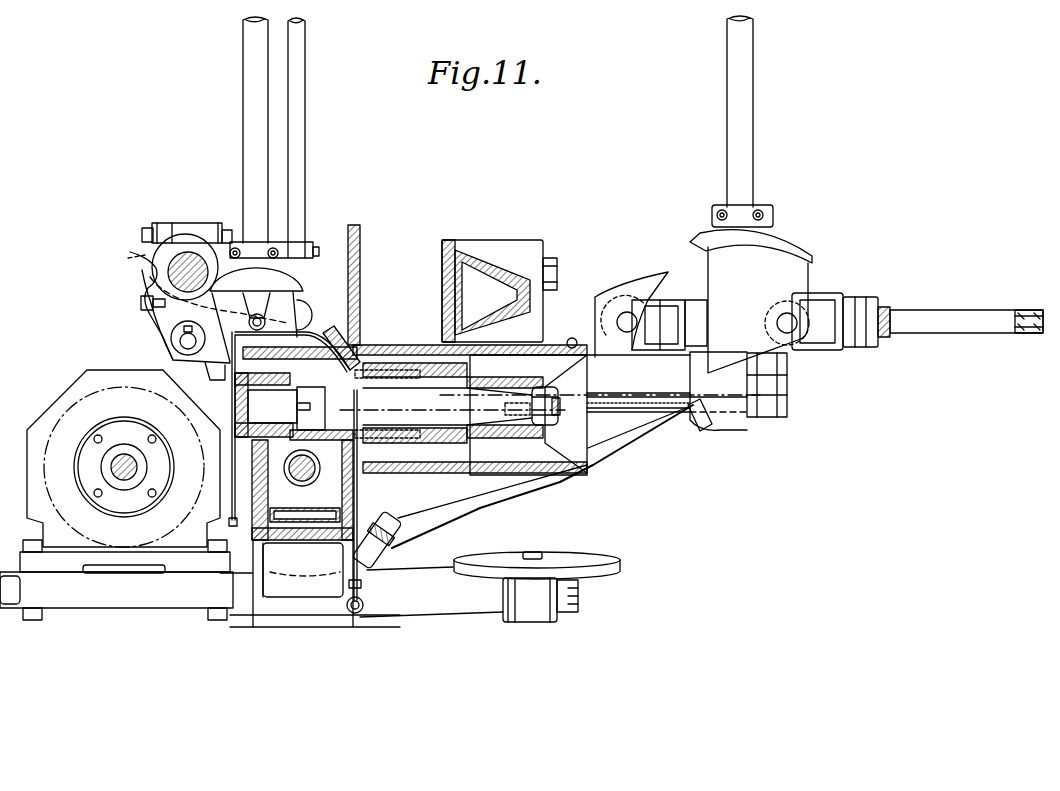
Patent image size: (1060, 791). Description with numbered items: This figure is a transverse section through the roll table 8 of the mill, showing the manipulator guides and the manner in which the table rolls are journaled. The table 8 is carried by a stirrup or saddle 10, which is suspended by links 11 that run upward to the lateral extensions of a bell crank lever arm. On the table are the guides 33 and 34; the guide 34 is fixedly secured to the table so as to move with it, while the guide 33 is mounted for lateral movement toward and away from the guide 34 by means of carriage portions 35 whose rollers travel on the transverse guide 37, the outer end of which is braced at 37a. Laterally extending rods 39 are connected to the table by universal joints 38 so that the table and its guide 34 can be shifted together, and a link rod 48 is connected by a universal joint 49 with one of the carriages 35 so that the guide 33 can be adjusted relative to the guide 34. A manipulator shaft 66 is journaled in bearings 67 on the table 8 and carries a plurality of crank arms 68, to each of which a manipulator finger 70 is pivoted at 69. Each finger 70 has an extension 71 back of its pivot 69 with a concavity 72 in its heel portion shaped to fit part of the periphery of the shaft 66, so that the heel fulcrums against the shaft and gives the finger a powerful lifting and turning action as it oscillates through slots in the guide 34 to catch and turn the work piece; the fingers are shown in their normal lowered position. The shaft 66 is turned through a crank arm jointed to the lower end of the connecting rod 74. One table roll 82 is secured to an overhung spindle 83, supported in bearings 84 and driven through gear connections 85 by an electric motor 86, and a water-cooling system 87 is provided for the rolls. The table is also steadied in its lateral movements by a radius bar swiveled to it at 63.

The links 11 is at (243, 118).
The connecting rod 74 is at (305, 118).
The bearings 67 is at (185, 230).
The manipulator shaft 66 is at (168, 262).
The concavity 72 is at (165, 270).
The extension 71 is at (160, 283).
The crank arms 68 is at (172, 318).
The pivot 69 is at (180, 342).
The manipulator finger 70 is at (208, 358).
The electric motor 86 is at (56, 410).
The gear connections 85 is at (301, 478).
The bearings 84 is at (250, 442).
The water-cooling system 87 is at (390, 445).
The guide 34 is at (362, 262).
The roll table 8 is at (397, 324).
The guide 33 is at (499, 290).
The table roll 82 is at (568, 492).
The overhung spindle 83 is at (520, 422).
The carriage portions 35 is at (585, 307).
The universal joint 49 is at (658, 310).
The transverse guide 37 is at (625, 405).
The stirrups or saddles 10 is at (713, 425).
The brace 37a is at (750, 414).
The universal joints 38 is at (838, 350).
The rods 39 is at (952, 330).
The link rod 48 is at (1028, 334).
The swivel 63 is at (575, 547).